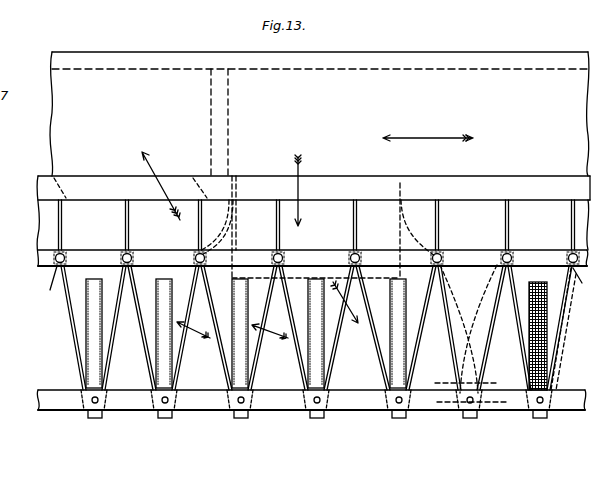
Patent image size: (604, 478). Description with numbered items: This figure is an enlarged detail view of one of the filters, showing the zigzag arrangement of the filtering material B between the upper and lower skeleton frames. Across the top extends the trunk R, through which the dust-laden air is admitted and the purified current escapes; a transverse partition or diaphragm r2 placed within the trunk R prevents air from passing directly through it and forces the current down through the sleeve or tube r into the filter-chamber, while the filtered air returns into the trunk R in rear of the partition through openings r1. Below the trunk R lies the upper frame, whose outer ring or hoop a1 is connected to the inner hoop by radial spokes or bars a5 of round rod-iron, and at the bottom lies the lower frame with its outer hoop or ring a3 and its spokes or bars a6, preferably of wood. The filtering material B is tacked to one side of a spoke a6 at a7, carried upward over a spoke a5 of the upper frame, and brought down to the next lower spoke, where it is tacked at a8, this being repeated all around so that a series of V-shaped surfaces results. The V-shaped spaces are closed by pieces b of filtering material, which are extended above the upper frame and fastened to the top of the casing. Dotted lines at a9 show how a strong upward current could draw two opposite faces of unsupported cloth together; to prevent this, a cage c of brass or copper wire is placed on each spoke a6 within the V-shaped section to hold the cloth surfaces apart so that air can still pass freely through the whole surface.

The trunk R is at (319, 114).
The openings r1 is at (313, 221).
The transverse partition or diaphragm r2 is at (216, 125).
The sleeve or tube r is at (235, 188).
The pieces of filtering material b is at (317, 225).
The outer ring or hoop a1 is at (313, 259).
The outer hoop or ring a3 is at (311, 397).
The radial spokes or bars a5 is at (63, 255).
The spokes or bars a6 is at (91, 420).
The tacking point a7 is at (530, 410).
The tacking point a8 is at (108, 407).
The contacting cloth faces a9 is at (495, 337).
The cage c is at (102, 348).
The filtering material B is at (300, 369).